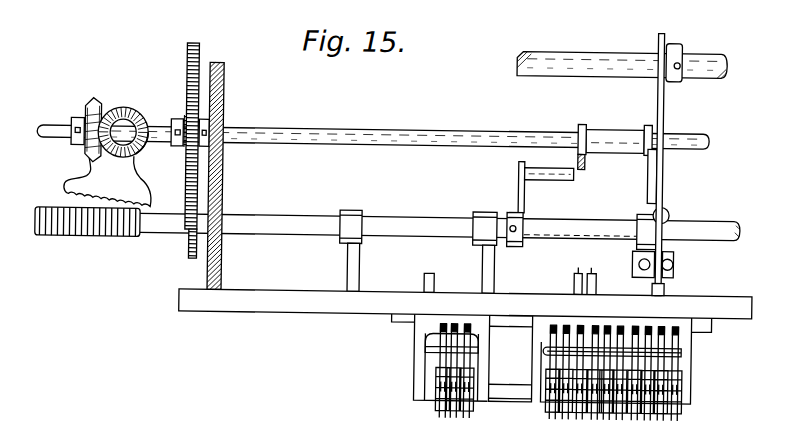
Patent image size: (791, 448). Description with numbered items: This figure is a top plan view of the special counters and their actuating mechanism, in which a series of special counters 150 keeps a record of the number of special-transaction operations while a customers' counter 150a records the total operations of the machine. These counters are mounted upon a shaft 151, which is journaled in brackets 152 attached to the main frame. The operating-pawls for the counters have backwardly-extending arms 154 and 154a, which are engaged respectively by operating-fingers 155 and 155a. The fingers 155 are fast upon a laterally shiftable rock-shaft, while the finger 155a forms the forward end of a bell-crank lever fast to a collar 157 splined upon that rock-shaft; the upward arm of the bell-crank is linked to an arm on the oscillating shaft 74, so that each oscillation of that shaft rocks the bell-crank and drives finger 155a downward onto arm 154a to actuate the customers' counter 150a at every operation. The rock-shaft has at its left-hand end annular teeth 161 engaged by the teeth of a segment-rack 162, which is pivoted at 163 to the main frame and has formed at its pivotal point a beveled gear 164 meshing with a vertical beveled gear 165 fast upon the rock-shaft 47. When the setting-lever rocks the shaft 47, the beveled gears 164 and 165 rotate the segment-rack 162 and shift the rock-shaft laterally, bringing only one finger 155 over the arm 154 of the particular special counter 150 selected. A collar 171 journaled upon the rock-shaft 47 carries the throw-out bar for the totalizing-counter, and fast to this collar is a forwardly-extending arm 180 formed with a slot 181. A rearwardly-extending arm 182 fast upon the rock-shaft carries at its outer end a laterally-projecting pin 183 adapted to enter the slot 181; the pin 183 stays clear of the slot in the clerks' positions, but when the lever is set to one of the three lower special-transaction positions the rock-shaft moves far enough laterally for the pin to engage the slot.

The rock-shaft 47 is at (382, 130).
The oscillating shaft 74 is at (589, 52).
The special counters 150 is at (421, 210).
The customers' counter 150a is at (651, 411).
The shaft 151 is at (612, 267).
The brackets 152 is at (420, 365).
The backwardly-extending arms 154 is at (425, 285).
The backwardly-extending arm 154a is at (665, 290).
The operating-fingers 155 is at (352, 258).
The operating-finger 155a is at (674, 262).
The collar 157 is at (644, 224).
The annular teeth 161 is at (122, 110).
The segment-rack 162 is at (108, 180).
The pivot 163 is at (137, 154).
The beveled gear 164 is at (105, 240).
The vertical beveled gear 165 is at (90, 110).
The collar 171 is at (612, 127).
The forwardly-extending arm 180 is at (647, 180).
The slot 181 is at (190, 150).
The rearwardly-extending arm 182 is at (518, 197).
The laterally-projecting pin 183 is at (553, 181).